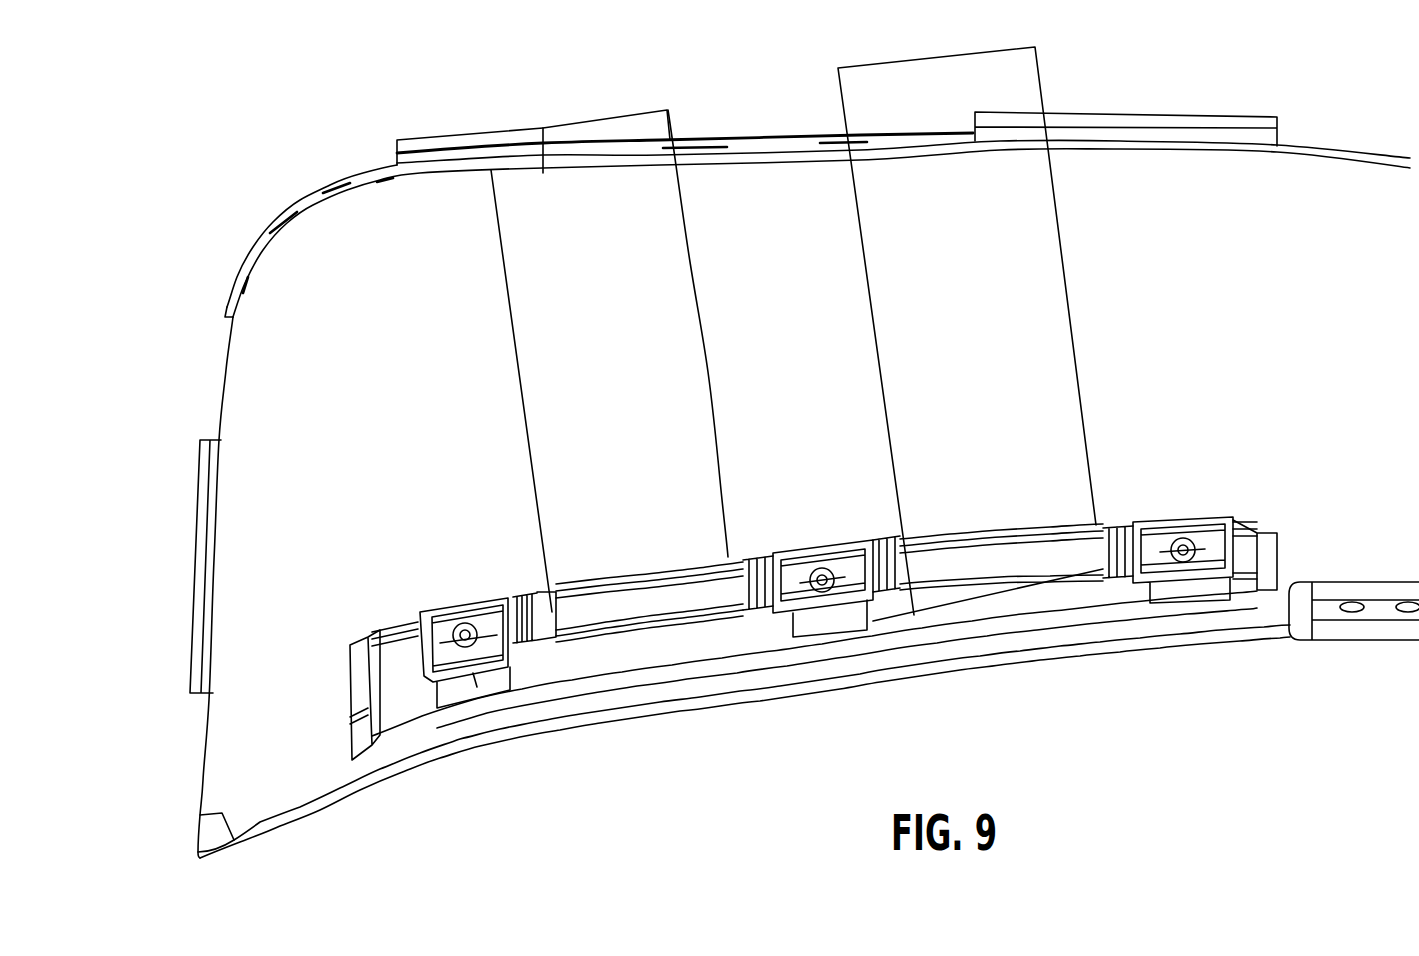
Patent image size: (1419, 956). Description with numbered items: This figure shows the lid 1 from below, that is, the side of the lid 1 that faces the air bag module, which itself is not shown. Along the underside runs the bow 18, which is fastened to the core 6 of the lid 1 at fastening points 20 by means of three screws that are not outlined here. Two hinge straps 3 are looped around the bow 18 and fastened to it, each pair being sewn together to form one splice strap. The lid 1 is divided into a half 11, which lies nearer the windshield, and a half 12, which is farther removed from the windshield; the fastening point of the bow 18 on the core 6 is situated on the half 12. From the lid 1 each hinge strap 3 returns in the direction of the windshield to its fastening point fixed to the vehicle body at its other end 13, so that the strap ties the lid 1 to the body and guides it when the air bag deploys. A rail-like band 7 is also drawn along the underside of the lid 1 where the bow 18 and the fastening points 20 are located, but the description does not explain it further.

The lid 1 is at (238, 372).
The hinge strap 3 is at (874, 230).
The core 6 is at (358, 650).
The mounting rail band 7 is at (643, 607).
The half of the lid 11 is at (325, 161).
The half of the lid 12 is at (342, 812).
The other end of the hinge strap 13 is at (595, 128).
The bow 18 is at (530, 600).
The fastening points 20 is at (465, 645).